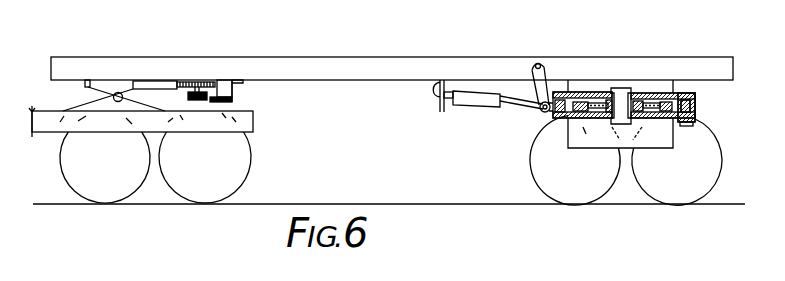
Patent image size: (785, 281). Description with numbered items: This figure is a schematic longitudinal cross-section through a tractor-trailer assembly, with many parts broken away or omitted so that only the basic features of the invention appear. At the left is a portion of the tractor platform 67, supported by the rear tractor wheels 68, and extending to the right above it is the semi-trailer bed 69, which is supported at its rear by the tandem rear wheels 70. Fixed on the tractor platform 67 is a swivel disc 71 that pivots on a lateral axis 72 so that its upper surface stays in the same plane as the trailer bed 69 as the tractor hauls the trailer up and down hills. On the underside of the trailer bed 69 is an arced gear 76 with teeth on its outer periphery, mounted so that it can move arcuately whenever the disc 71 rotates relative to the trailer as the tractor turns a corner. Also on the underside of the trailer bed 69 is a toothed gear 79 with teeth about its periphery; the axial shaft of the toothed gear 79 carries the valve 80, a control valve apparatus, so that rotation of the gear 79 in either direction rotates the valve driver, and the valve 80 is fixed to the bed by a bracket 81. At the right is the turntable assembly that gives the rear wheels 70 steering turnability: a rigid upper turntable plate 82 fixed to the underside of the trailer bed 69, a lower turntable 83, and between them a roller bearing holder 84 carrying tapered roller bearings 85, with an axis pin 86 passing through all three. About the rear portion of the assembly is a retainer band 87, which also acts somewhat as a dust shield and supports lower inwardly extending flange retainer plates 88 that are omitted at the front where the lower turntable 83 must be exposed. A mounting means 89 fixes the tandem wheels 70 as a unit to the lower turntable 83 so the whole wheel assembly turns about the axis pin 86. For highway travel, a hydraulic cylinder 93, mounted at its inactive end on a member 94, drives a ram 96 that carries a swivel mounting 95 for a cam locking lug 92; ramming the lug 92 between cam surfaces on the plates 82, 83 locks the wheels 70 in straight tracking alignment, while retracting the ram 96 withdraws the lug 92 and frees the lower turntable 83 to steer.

The tractor platform 67 is at (61, 132).
The rear tractor wheels 68 is at (91, 175).
The semi-trailer bed 69 is at (403, 65).
The rear wheels 70 is at (560, 178).
The swivel disc 71 is at (85, 83).
The lateral axis 72 is at (118, 102).
The arced gear 76 is at (165, 80).
The toothed gear 79 is at (205, 82).
The valve 80 is at (234, 101).
The bracket 81 is at (234, 92).
The upper turntable plate 82 is at (569, 92).
The lower turntable 83 is at (566, 118).
The roller bearing holder 84 is at (650, 93).
The tapered roller bearings 85 is at (680, 93).
The axis pin 86 is at (626, 88).
The retainer band 87 is at (697, 110).
The flange retainer plates 88 is at (686, 126).
The mounting means 89 is at (583, 128).
The cam locking lug 92 is at (552, 108).
The hydraulic cylinder 93 is at (490, 92).
The member 94 is at (440, 83).
The swivel mounting 95 is at (532, 68).
The ram 96 is at (524, 96).